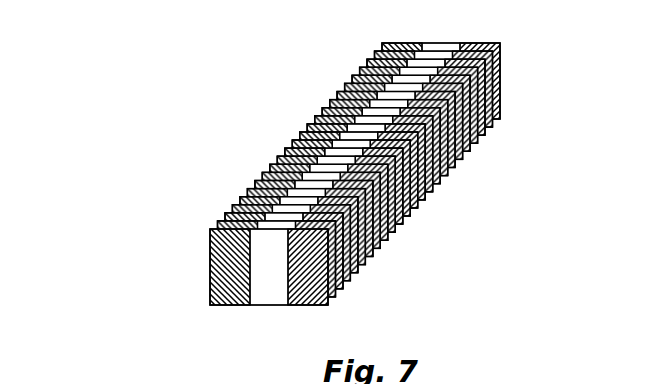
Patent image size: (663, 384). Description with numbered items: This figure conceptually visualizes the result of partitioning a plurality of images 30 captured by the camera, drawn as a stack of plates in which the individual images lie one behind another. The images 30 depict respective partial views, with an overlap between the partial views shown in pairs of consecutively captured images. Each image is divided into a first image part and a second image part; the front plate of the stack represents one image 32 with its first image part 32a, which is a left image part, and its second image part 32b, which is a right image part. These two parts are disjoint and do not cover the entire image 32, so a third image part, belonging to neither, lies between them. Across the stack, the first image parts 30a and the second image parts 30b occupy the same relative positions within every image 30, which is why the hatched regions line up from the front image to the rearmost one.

The images 30 is at (326, 179).
The first image parts 30a is at (234, 129).
The second image parts 30b is at (500, 206).
The image 32 is at (261, 273).
The first image part 32a is at (220, 305).
The second image part 32b is at (315, 305).